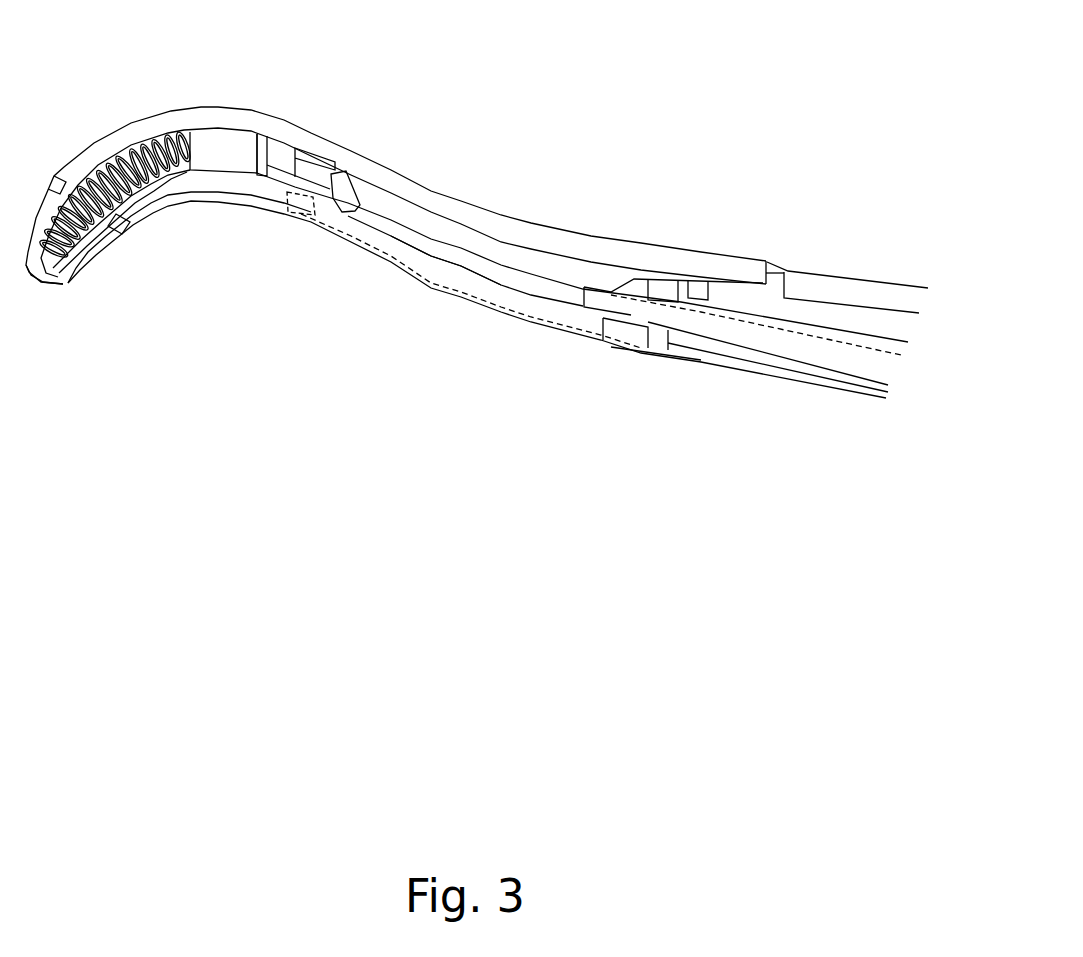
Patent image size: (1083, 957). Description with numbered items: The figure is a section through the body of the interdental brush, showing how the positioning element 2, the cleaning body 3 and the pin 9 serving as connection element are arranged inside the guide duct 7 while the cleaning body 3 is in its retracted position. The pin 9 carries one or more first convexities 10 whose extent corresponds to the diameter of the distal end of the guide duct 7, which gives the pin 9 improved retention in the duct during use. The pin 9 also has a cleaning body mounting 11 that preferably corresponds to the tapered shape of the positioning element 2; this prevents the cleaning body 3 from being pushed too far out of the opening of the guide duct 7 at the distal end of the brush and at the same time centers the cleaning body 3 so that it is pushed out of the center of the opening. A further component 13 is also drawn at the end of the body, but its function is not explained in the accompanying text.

The positioning element 2 is at (65, 266).
The cleaning body 3 is at (114, 113).
The guide duct 7 is at (531, 262).
The pin 9 is at (439, 243).
The first convexities 10 is at (334, 159).
The cleaning body mounting 11 is at (222, 150).
The end cap 13 is at (29, 272).